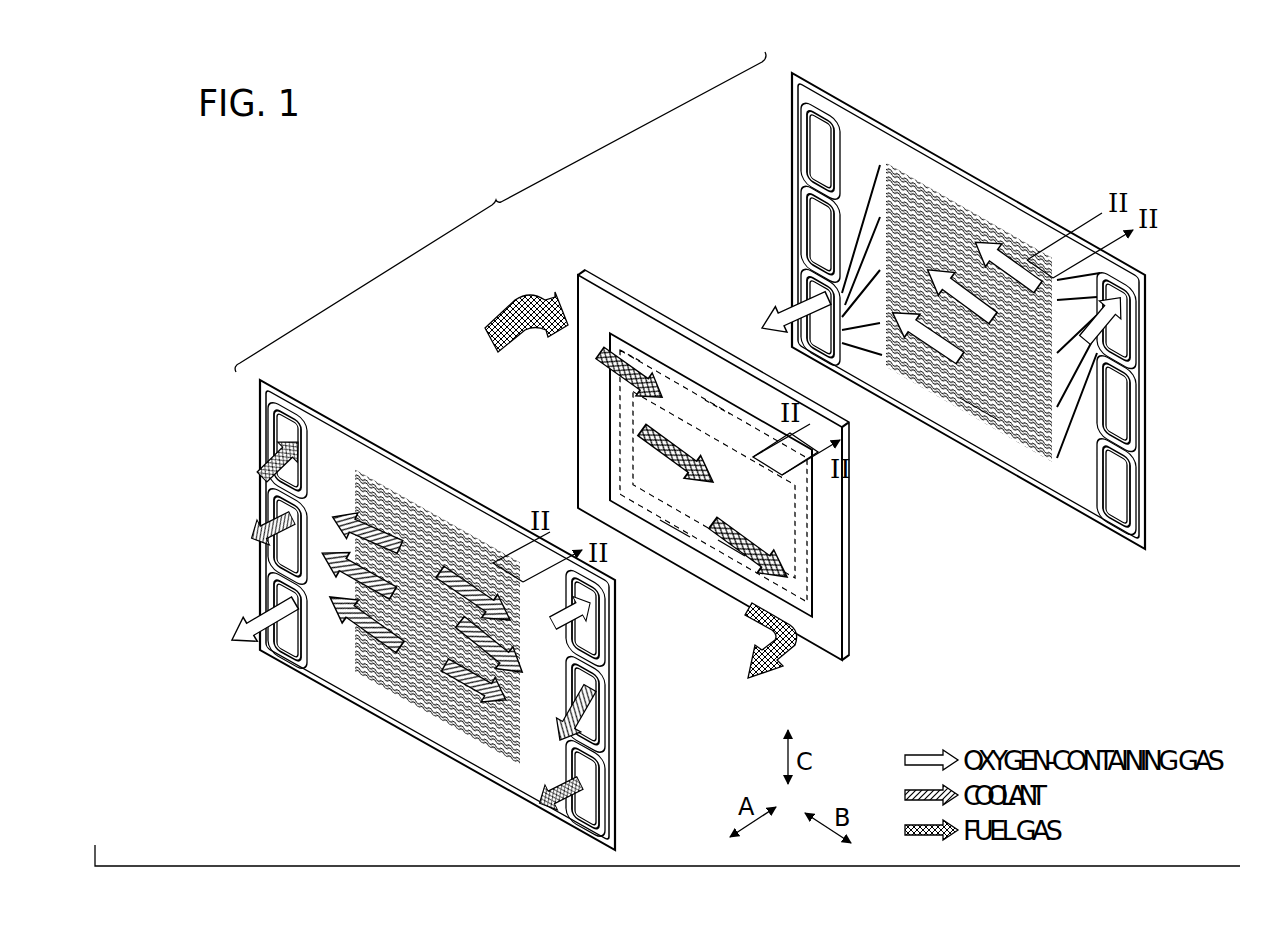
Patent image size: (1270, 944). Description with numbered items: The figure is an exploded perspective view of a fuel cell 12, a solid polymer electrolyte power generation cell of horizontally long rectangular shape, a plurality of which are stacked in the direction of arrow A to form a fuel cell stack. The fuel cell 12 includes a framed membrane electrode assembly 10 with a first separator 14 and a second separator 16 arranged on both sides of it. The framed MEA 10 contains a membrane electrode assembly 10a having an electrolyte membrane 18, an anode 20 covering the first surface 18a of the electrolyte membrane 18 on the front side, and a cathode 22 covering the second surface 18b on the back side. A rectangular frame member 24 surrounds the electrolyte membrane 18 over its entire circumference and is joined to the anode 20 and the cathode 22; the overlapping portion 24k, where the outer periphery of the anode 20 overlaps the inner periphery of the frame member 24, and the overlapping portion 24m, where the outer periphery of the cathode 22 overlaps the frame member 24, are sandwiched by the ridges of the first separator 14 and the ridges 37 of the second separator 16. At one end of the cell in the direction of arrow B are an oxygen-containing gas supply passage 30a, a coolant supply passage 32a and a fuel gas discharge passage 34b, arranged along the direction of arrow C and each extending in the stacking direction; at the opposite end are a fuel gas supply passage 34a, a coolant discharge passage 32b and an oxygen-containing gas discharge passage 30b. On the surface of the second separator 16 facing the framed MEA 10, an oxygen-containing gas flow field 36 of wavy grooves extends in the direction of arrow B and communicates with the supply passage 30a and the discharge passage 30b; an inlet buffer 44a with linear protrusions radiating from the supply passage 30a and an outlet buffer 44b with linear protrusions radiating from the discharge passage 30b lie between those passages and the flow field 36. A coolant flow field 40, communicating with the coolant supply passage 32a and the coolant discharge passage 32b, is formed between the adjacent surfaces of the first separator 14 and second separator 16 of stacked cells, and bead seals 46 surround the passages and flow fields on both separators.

The framed membrane electrode assembly 10 is at (580, 272).
The membrane electrode assembly 10a is at (830, 527).
The fuel cell 12 is at (500, 212).
The first separator 14 is at (277, 392).
The second separator 16 is at (830, 96).
The electrolyte membrane 18 is at (672, 372).
The first surface of the electrolyte membrane 18a is at (640, 345).
The second surface of the electrolyte membrane 18b is at (722, 402).
The anode 20 is at (615, 332).
The cathode 22 is at (702, 398).
The frame member 24 is at (826, 586).
The overlapping portion 24k is at (730, 552).
The overlapping portion 24m is at (672, 540).
The oxygen-containing gas supply passage 30a is at (590, 640).
The oxygen-containing gas discharge passage 30b is at (283, 592).
The coolant supply passage 32a is at (592, 694).
The coolant discharge passage 32b is at (283, 503).
The fuel gas supply passage 34a is at (283, 438).
The fuel gas discharge passage 34b is at (590, 793).
The oxygen-containing gas flow field 36 is at (928, 390).
The ridges 37 is at (992, 407).
The coolant flow field 40 is at (385, 482).
The inlet buffer 44a is at (1068, 470).
The outlet buffer 44b is at (857, 160).
The bead seal 46 is at (420, 488).